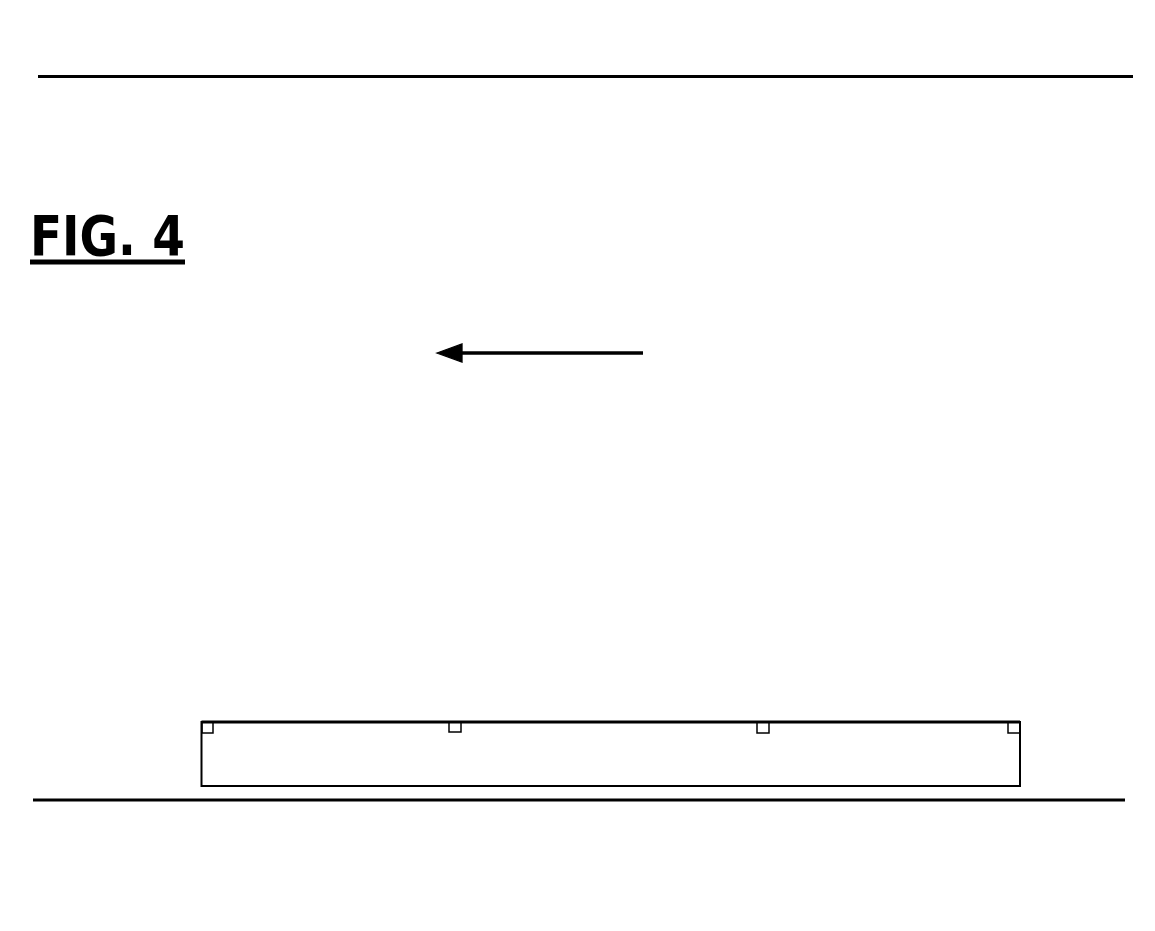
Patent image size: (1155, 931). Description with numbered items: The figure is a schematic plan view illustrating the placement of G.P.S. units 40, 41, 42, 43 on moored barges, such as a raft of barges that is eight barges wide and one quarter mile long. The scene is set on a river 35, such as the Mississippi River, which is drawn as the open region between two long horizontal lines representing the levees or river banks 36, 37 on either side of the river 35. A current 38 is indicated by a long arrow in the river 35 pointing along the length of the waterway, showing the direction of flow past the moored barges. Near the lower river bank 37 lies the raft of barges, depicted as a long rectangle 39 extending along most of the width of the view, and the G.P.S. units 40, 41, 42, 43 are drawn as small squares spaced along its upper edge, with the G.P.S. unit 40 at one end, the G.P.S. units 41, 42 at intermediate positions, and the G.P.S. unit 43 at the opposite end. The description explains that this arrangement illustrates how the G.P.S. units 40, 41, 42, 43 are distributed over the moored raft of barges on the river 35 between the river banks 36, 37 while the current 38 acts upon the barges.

The river 35 is at (787, 282).
The levee or river bank 36 is at (805, 75).
The levee or river bank 37 is at (1033, 801).
The current 38 is at (548, 340).
The carrier body 39 is at (611, 754).
The G.P.S. unit 40 is at (213, 721).
The G.P.S. unit 41 is at (460, 722).
The G.P.S. unit 42 is at (769, 722).
The G.P.S. unit 43 is at (1018, 722).